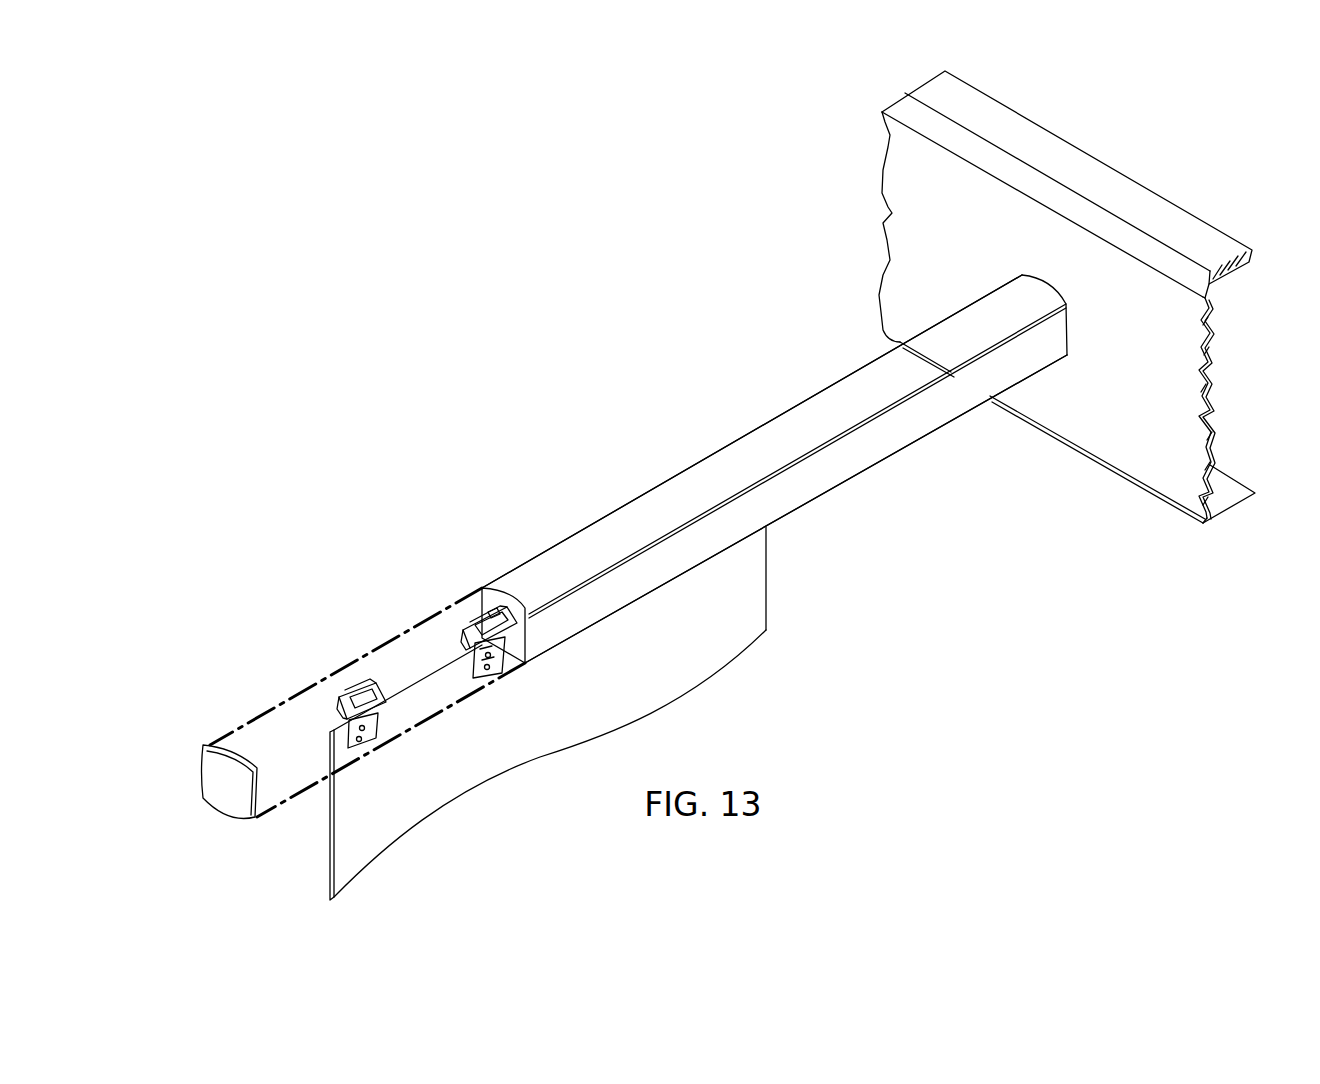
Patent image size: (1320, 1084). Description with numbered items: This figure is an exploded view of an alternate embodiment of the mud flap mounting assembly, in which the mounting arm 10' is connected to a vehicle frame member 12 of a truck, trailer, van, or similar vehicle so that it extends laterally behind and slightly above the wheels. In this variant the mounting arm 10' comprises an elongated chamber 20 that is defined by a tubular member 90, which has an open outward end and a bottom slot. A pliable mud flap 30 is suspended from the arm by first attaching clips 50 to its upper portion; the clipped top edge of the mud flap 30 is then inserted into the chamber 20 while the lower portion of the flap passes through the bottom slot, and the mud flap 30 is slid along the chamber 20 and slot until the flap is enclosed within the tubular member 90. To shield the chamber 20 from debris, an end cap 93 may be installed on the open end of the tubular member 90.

The mounting arm 10' is at (774, 469).
The vehicle frame member 12 is at (1117, 450).
The elongated chamber 20 is at (527, 622).
The mud flap 30 is at (720, 652).
The clip 50 is at (490, 675).
The tubular member 90 is at (827, 403).
The end cap 93 is at (226, 795).